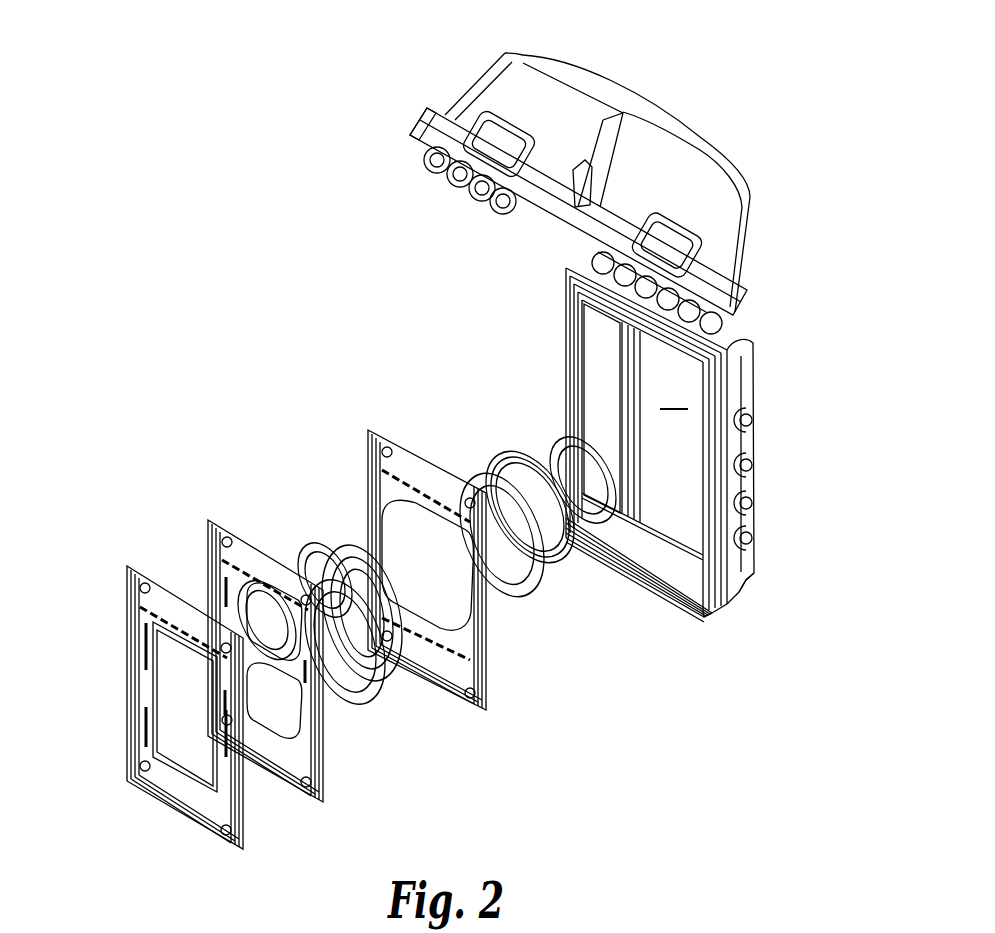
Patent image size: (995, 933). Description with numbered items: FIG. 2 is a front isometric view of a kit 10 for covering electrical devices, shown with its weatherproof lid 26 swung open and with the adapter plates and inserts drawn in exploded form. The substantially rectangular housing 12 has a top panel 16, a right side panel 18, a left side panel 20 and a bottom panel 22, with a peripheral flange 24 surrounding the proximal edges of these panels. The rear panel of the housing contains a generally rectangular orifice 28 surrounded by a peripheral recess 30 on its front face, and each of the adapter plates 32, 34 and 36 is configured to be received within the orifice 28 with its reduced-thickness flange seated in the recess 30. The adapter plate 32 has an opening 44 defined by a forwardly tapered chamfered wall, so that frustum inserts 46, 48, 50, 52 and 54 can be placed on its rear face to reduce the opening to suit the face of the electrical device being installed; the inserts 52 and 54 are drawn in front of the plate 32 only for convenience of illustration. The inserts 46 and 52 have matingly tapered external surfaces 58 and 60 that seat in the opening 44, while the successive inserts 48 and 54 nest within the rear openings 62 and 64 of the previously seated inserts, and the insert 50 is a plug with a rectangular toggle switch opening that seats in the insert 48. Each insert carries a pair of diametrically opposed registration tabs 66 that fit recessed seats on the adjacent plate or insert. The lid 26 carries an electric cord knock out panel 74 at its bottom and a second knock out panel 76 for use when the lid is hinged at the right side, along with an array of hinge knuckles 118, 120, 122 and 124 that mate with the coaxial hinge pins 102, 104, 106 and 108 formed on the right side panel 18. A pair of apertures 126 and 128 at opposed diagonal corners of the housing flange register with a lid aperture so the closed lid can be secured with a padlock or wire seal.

The kit 10 is at (182, 332).
The housing 12 is at (746, 574).
The top panel 16 is at (735, 330).
The right side panel 18 is at (742, 378).
The left side panel 20 is at (597, 350).
The bottom panel 22 is at (670, 568).
The peripheral flange 24 is at (642, 578).
The weatherproof lid 26 is at (560, 68).
The orifice 28 is at (674, 397).
The peripheral recess 30 is at (630, 360).
The adapter plate 32 is at (413, 562).
The adapter plate 34 is at (206, 547).
The adapter plate 36 is at (126, 595).
The opening 44 is at (448, 608).
The frustum insert 46 is at (503, 596).
The frustum insert 48 is at (544, 565).
The frustum insert 50 is at (544, 517).
The frustum insert 52 is at (325, 705).
The frustum insert 54 is at (383, 676).
The tapered external surface 58 is at (478, 521).
The tapered external surface 60 is at (352, 698).
The opening 62 is at (517, 568).
The opening 64 is at (272, 606).
The registration tab 66 is at (612, 478).
The electric cord knock out panel 74 is at (487, 148).
The knock out panel 76 is at (705, 260).
The hinge pin 102 is at (758, 420).
The hinge pin 104 is at (758, 463).
The hinge pin 106 is at (758, 502).
The hinge pin 108 is at (758, 537).
The hinge knuckle 118 is at (502, 218).
The hinge knuckle 120 is at (483, 204).
The hinge knuckle 122 is at (455, 184).
The hinge knuckle 124 is at (423, 158).
The aperture 126 is at (714, 620).
The aperture 128 is at (576, 270).